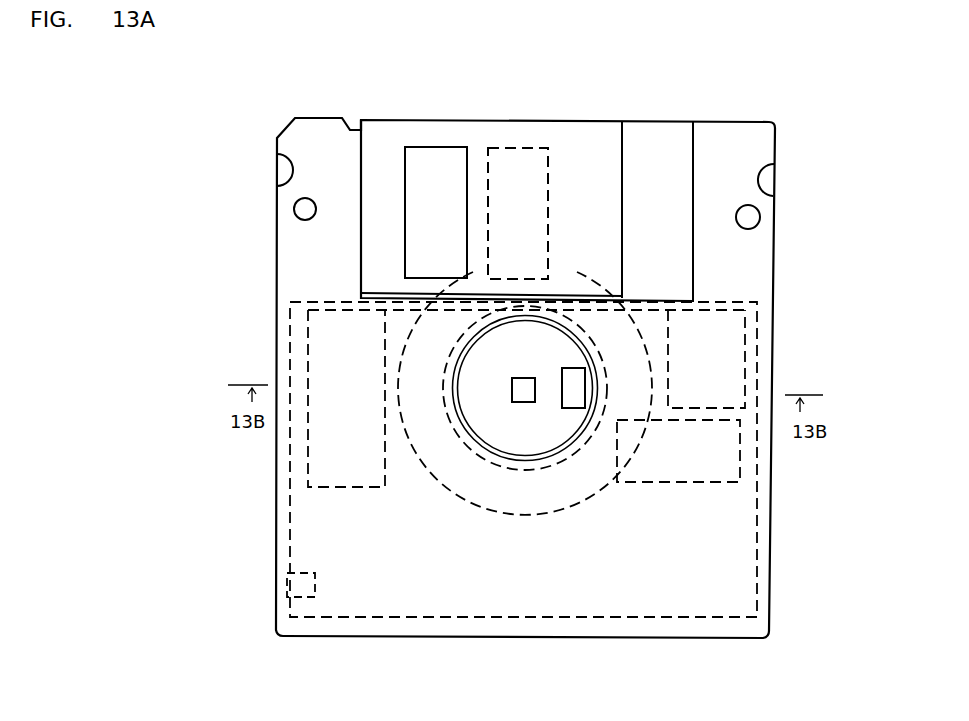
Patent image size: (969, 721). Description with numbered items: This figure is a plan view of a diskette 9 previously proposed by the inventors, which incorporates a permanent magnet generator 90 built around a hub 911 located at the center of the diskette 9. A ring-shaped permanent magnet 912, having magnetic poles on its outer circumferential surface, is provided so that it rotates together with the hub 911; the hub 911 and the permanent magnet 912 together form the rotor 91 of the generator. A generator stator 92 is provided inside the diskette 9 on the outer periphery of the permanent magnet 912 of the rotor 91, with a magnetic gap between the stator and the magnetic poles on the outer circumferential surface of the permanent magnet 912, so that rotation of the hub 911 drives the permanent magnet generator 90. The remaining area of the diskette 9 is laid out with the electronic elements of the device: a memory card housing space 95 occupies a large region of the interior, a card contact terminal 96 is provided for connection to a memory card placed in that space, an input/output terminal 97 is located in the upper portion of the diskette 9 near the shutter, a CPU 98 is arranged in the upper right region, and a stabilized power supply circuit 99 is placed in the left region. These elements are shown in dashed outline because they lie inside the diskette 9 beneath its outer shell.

The diskette 9 is at (778, 139).
The input/output terminal 97 is at (513, 178).
The CPU 98 is at (720, 362).
The card contact terminal 96 is at (695, 468).
The stabilized power supply circuit 99 is at (338, 457).
The memory card housing space 95 is at (713, 593).
The generator stator 92 is at (443, 481).
The permanent magnet generator 90 is at (487, 513).
The rotor 91 is at (527, 468).
The ring-shaped permanent magnet 912 is at (560, 460).
The hub 911 is at (562, 423).